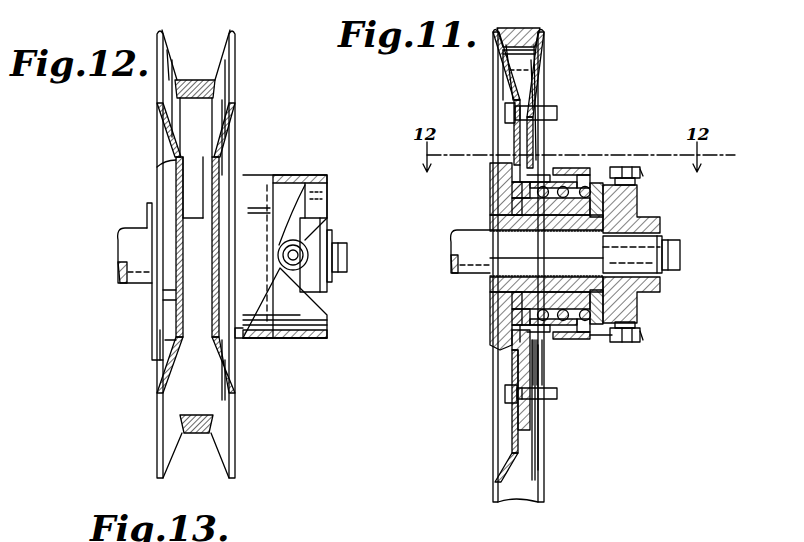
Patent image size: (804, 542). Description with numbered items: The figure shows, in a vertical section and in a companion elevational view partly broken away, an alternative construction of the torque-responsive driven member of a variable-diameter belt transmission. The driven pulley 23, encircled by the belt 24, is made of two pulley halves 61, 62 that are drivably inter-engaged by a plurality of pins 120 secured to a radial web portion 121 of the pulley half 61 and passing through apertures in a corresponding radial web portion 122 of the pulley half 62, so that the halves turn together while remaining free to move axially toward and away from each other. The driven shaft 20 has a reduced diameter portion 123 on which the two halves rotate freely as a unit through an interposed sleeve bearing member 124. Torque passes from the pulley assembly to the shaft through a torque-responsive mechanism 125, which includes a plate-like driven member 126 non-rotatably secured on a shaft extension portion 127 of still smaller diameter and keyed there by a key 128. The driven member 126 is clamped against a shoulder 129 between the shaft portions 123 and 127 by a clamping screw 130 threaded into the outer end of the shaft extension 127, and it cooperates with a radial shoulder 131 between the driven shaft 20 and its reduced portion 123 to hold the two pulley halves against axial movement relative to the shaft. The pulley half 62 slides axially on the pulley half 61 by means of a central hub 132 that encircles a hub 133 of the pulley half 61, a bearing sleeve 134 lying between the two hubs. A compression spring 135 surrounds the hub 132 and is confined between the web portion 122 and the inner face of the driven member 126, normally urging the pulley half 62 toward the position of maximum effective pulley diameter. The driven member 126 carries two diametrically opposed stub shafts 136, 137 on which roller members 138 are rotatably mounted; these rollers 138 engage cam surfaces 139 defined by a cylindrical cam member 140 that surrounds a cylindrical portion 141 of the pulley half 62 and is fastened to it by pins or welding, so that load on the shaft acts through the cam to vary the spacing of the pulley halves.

In FIG. 12, the driven shaft 20 is at (120, 277).
In FIG. 11, the driven shaft 20 is at (452, 264).
In FIG. 11, the driven pulley 23 is at (594, 84).
In FIG. 12, the belt 24 is at (200, 433).
In FIG. 11, the belt 24 is at (538, 500).
In FIG. 12, the pulley half 61 is at (172, 427).
In FIG. 11, the pulley half 61 is at (498, 55).
In FIG. 12, the pulley half 62 is at (227, 430).
In FIG. 11, the pulley half 62 is at (540, 60).
In FIG. 11, the pins 120 is at (557, 113).
In FIG. 11, the radial web portion 121 is at (512, 142).
In FIG. 11, the radial web portion 122 is at (530, 147).
In FIG. 11, the reduced diameter portion 123 is at (496, 335).
In FIG. 11, the sleeve bearing member 124 is at (510, 235).
In FIG. 11, the torque-responsive mechanism 125 is at (670, 202).
In FIG. 12, the driven member 126 is at (328, 240).
In FIG. 11, the driven member 126 is at (665, 219).
In FIG. 11, the shaft extension portion 127 is at (652, 306).
In FIG. 11, the key 128 is at (668, 242).
In FIG. 11, the shoulder 129 is at (612, 250).
In FIG. 12, the clamping screw 130 is at (347, 266).
In FIG. 11, the clamping screw 130 is at (681, 257).
In FIG. 11, the radial shoulder 131 is at (494, 300).
In FIG. 11, the central hub 132 is at (520, 208).
In FIG. 12, the hub 133 is at (193, 280).
In FIG. 11, the hub 133 is at (497, 346).
In FIG. 11, the bearing sleeve 134 is at (551, 226).
In FIG. 11, the compression spring 135 is at (570, 343).
In FIG. 11, the stub shaft 136 is at (626, 167).
In FIG. 11, the stub shaft 137 is at (632, 345).
In FIG. 12, the roller members 138 is at (285, 245).
In FIG. 11, the roller members 138 is at (640, 171).
In FIG. 12, the cam surfaces 139 is at (326, 216).
In FIG. 12, the cylindrical cam member 140 is at (295, 339).
In FIG. 11, the cylindrical cam member 140 is at (603, 335).
In FIG. 12, the cylindrical portion 141 is at (237, 176).
In FIG. 11, the cylindrical portion 141 is at (543, 350).